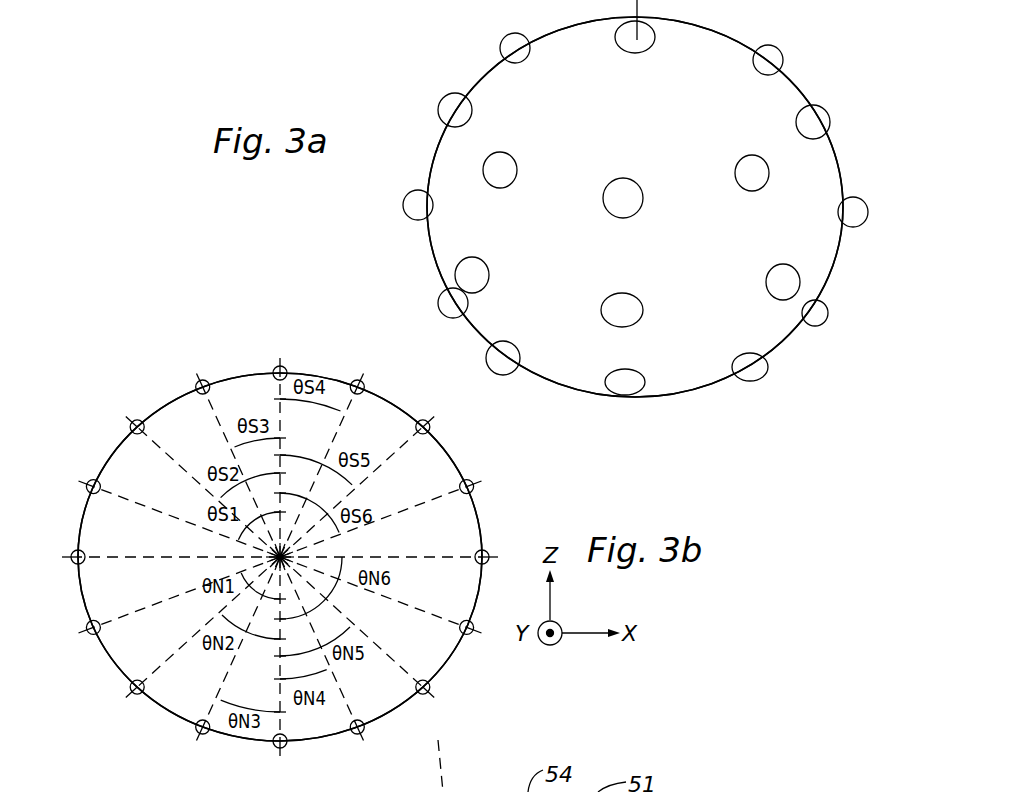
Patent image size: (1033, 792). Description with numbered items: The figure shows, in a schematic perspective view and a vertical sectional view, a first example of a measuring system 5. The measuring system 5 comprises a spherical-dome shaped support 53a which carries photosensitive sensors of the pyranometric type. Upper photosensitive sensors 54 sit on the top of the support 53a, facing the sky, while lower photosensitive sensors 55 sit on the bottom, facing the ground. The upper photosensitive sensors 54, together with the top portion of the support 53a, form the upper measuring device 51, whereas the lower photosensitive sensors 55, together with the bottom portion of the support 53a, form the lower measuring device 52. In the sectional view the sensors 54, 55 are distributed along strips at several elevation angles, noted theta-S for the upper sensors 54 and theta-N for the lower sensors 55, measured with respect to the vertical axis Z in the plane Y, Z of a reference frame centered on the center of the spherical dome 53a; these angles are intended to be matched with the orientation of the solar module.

In FIG. 3a, the measuring system 5 is at (388, 58).
In FIG. 3b, the measuring system 5 is at (138, 330).
In FIG. 3a, the upper measuring device 51 is at (848, 94).
In FIG. 3b, the upper measuring device 51 is at (52, 382).
In FIG. 3a, the lower measuring device 52 is at (410, 268).
In FIG. 3b, the lower measuring device 52 is at (52, 562).
In FIG. 3a, the spherical-dome shaped support 53a is at (700, 55).
In FIG. 3b, the spherical-dome shaped support 53a is at (243, 374).
In FIG. 3a, the upper photosensitive sensors 54 is at (512, 45).
In FIG. 3b, the upper photosensitive sensors 54 is at (136, 420).
In FIG. 3a, the lower photosensitive sensors 55 is at (503, 362).
In FIG. 3b, the lower photosensitive sensors 55 is at (204, 735).